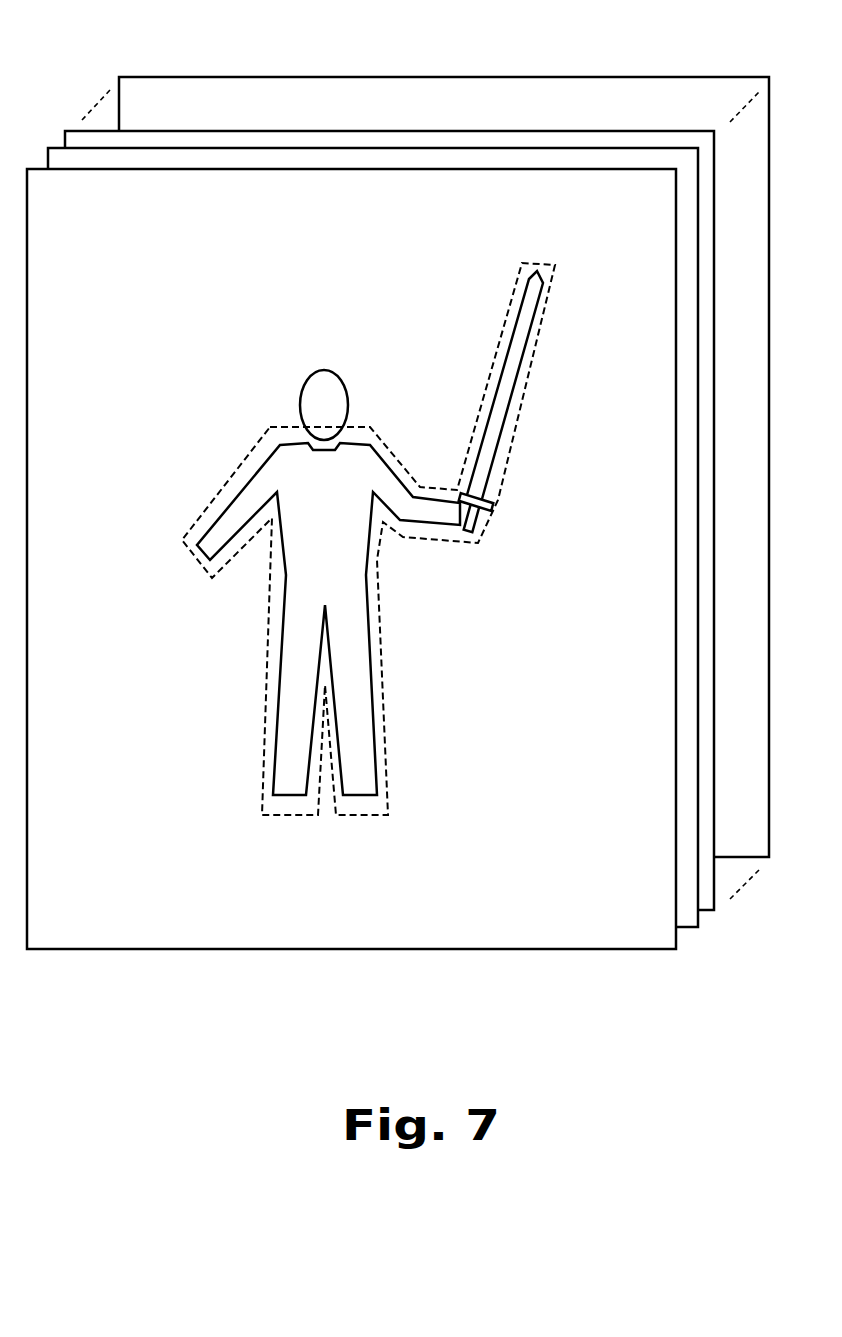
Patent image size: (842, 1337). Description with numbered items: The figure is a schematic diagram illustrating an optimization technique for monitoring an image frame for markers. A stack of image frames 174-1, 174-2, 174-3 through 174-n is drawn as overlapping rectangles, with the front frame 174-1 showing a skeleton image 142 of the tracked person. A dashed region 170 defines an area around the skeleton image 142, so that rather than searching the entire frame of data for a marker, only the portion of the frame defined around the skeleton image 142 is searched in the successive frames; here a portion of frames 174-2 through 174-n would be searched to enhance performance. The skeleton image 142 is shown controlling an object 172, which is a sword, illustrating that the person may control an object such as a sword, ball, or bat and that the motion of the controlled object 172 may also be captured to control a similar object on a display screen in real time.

The skeleton image 142 is at (324, 370).
The region 170 is at (377, 817).
The object 172 is at (531, 275).
The frame 174-1 is at (676, 948).
The frame 174-2 is at (698, 927).
The frame 174-3 is at (714, 910).
The frame 174-n is at (769, 857).